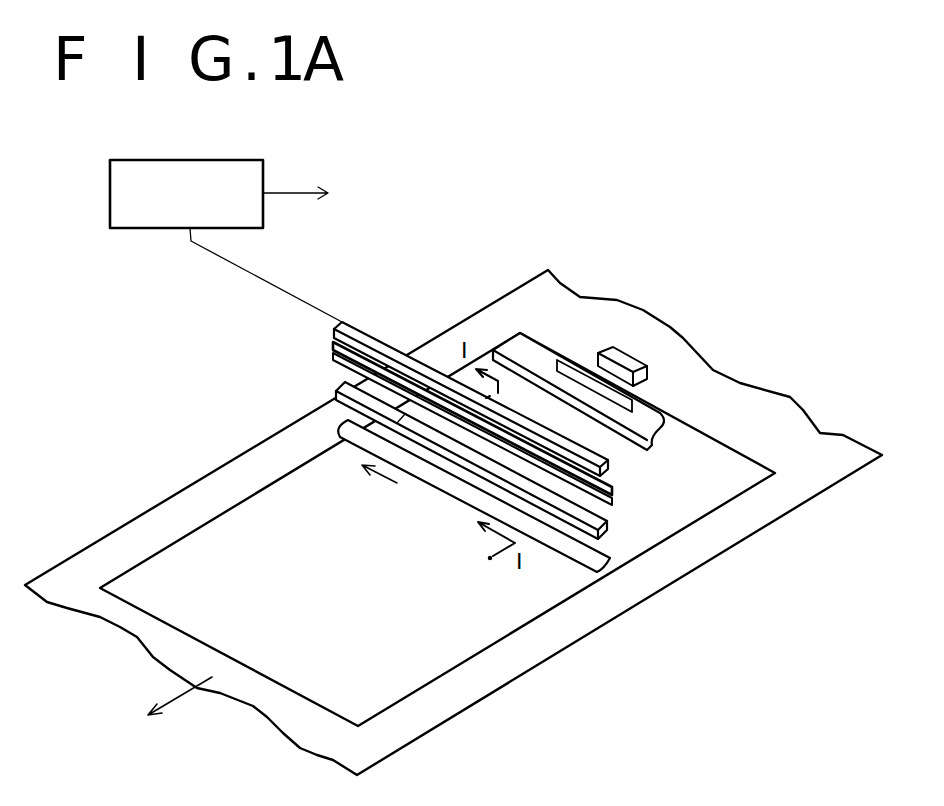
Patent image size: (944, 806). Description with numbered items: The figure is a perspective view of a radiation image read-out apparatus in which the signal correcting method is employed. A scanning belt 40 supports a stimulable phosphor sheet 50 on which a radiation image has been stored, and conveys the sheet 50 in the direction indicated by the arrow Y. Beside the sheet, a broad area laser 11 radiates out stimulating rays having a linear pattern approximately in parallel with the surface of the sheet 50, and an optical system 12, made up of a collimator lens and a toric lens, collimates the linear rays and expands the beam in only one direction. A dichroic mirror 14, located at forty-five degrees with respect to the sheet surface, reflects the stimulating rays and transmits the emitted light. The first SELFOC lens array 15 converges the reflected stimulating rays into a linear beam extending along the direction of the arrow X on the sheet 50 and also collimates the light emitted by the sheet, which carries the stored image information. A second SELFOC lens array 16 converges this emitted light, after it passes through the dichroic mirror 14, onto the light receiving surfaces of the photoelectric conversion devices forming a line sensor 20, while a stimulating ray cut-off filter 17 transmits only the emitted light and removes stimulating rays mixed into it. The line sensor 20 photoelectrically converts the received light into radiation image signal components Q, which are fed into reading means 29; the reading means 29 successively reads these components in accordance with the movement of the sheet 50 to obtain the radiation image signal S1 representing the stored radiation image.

The broad area laser 11 is at (603, 349).
The optical system 12 is at (662, 433).
The dichroic mirror 14 is at (342, 395).
The first SELFOC lens array 15 is at (333, 422).
The second SELFOC lens array 16 is at (612, 502).
The stimulating ray cut-off filter 17 is at (610, 486).
The line sensor 20 is at (383, 343).
The reading means 29 is at (205, 160).
The scanning belt 40 is at (780, 403).
The stimulable phosphor sheet 50 is at (468, 652).
The radiation image signal components Q is at (266, 275).
The radiation image signal S1 is at (290, 197).
The arrow X is at (388, 487).
The arrow Y is at (183, 697).